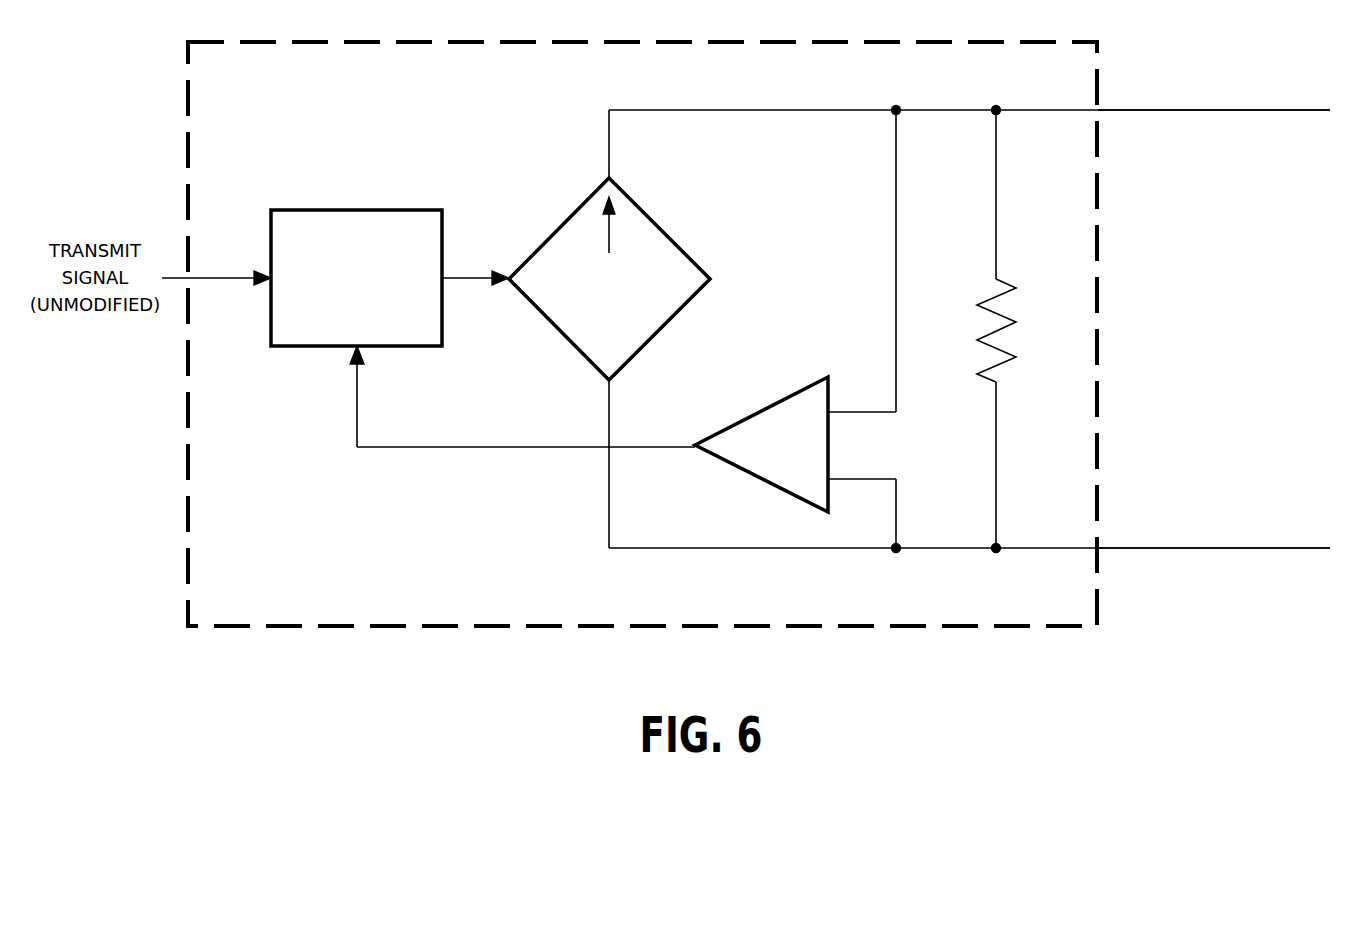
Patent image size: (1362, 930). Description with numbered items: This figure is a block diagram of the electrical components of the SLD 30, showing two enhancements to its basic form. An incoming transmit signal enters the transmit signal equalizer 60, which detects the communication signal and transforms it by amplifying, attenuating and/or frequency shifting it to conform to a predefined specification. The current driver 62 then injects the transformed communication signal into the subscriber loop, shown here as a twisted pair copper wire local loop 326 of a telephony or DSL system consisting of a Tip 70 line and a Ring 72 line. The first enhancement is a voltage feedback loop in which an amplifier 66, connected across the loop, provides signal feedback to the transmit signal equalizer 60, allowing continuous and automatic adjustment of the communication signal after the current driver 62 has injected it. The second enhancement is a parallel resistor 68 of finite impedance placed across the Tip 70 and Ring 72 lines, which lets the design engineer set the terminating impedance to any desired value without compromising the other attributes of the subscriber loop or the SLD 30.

The SLD 30 is at (642, 334).
The transmit signal equalizer 60 is at (356, 278).
The current driver 62 is at (609, 279).
The amplifier 66 is at (795, 393).
The parallel resistor 68 is at (979, 329).
The Tip line 70 is at (969, 132).
The Ring line 72 is at (969, 522).
The twisted pair copper wire local loop 326 is at (1216, 329).